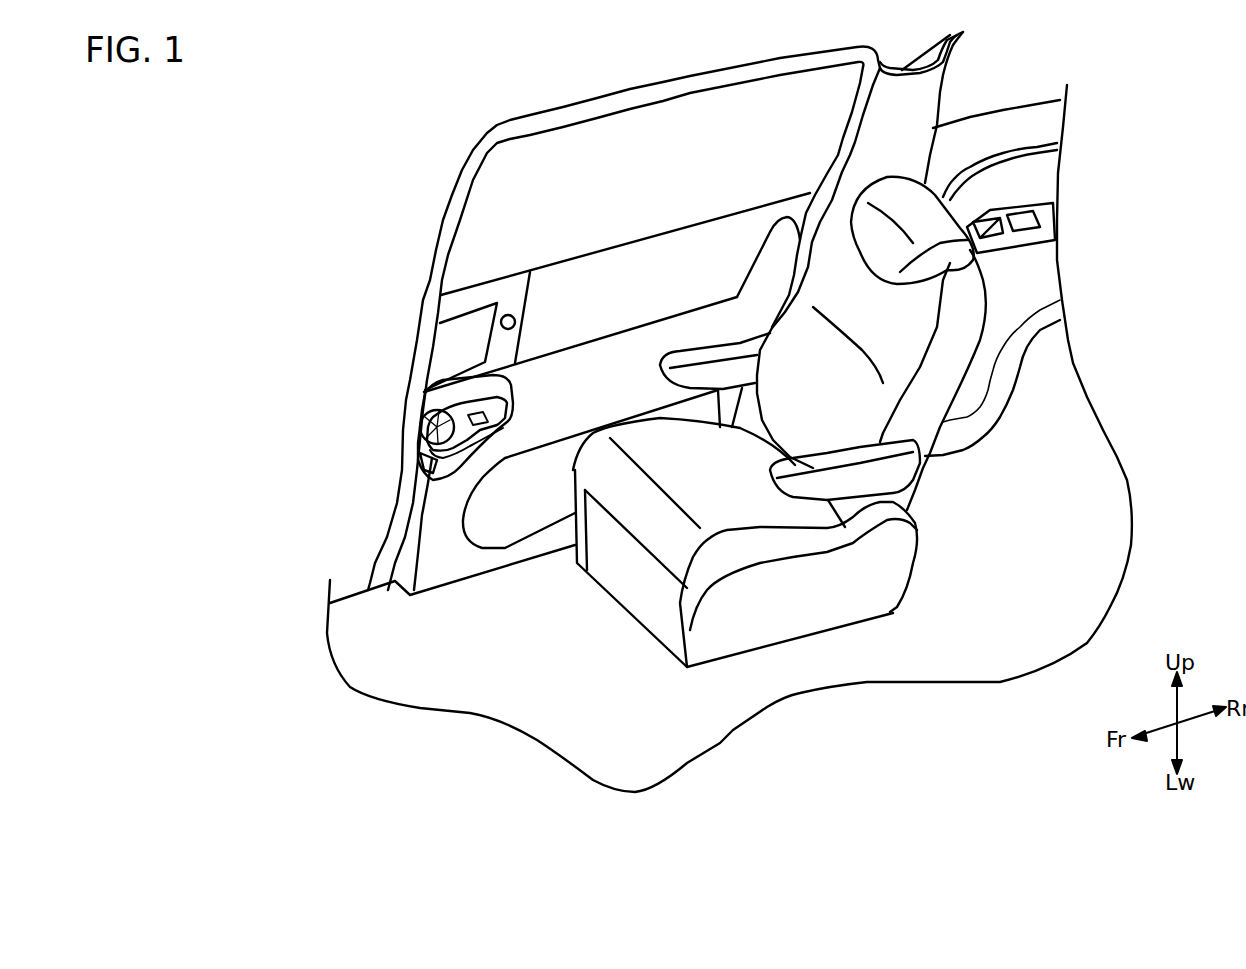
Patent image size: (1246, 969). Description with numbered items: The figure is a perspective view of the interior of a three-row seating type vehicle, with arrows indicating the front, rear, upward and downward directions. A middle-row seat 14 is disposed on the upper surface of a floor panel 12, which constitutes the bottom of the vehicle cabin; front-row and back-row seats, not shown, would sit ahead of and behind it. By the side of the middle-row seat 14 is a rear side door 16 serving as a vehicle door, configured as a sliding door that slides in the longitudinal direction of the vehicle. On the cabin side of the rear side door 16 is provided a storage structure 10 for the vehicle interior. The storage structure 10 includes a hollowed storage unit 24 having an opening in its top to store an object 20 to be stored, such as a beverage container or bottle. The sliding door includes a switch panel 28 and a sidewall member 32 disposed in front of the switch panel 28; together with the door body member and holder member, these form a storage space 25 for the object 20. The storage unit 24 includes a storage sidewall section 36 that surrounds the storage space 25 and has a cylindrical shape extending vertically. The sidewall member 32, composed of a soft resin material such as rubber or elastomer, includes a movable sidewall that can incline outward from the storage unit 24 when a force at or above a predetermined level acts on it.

The storage structure 10 is at (396, 405).
The floor panel 12 is at (930, 660).
The middle-row seat 14 is at (885, 176).
The rear side door 16 is at (420, 297).
The object to be stored 20 is at (436, 424).
The storage unit 24 is at (477, 400).
The storage space 25 is at (430, 434).
The switch panel 28 is at (500, 417).
The sidewall member 32 is at (420, 458).
The storage sidewall section 36 is at (452, 470).